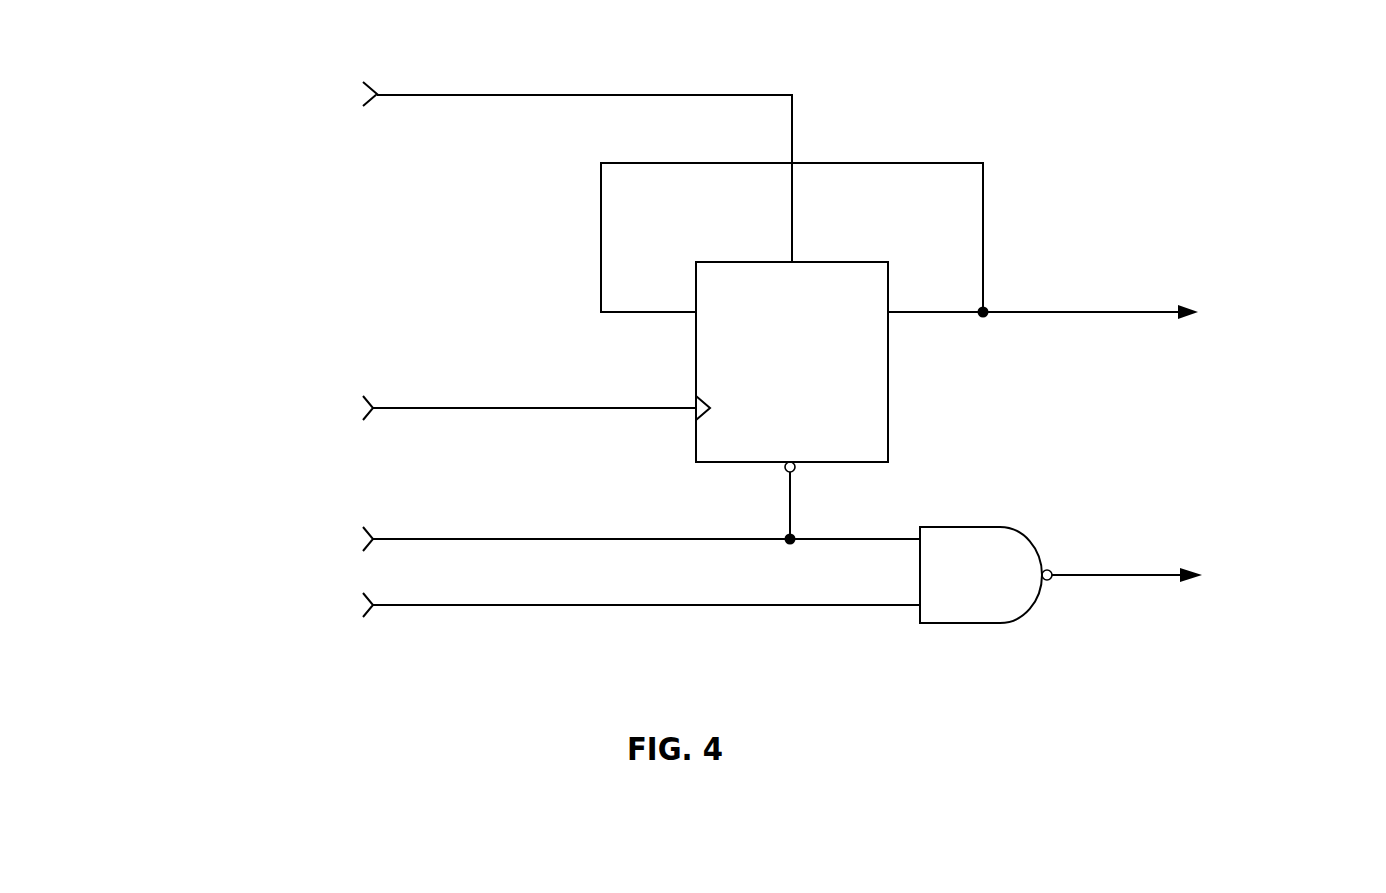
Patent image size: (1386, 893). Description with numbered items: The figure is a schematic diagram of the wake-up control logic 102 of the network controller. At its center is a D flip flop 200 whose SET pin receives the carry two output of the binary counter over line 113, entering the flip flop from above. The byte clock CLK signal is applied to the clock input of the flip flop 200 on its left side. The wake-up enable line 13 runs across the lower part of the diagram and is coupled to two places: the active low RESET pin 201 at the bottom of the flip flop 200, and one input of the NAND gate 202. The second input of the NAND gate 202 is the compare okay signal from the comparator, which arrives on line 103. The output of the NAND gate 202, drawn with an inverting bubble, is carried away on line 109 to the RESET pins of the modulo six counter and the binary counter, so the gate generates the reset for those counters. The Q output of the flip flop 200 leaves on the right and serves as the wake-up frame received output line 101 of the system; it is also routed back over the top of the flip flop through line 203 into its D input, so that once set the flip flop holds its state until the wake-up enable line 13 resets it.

The wake-up control logic 102 is at (962, 96).
The line 113 is at (569, 93).
The line 203 is at (601, 229).
The D flip flop 200 is at (855, 260).
The wake-up frame received output line 101 is at (1107, 312).
The active low RESET pin 201 is at (793, 505).
The wake-up enable line 13 is at (558, 538).
The line 103 is at (584, 604).
The NAND gate 202 is at (960, 624).
The line 109 is at (1107, 574).